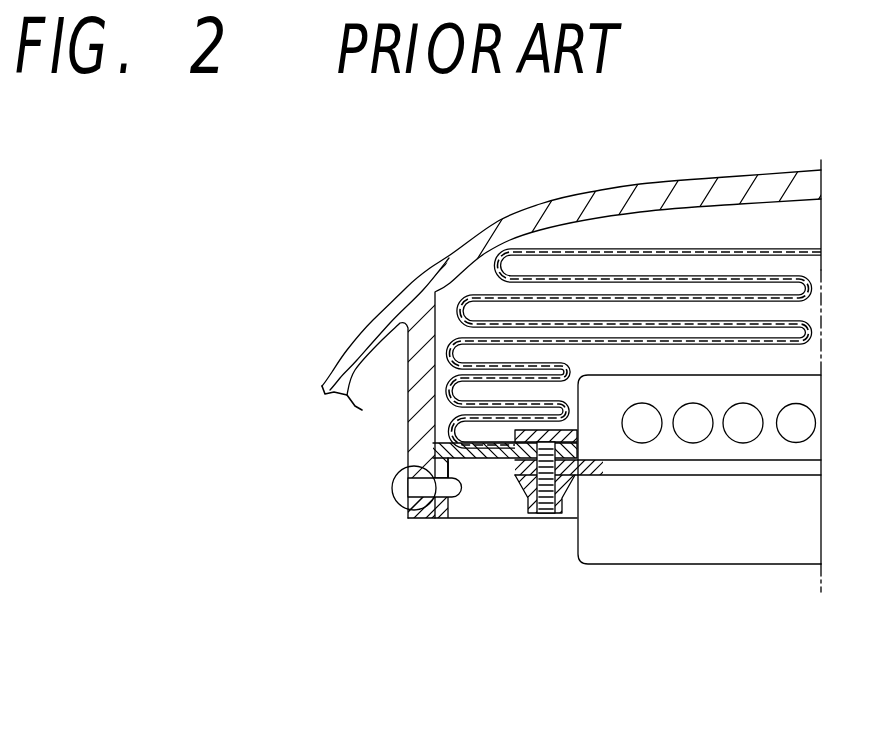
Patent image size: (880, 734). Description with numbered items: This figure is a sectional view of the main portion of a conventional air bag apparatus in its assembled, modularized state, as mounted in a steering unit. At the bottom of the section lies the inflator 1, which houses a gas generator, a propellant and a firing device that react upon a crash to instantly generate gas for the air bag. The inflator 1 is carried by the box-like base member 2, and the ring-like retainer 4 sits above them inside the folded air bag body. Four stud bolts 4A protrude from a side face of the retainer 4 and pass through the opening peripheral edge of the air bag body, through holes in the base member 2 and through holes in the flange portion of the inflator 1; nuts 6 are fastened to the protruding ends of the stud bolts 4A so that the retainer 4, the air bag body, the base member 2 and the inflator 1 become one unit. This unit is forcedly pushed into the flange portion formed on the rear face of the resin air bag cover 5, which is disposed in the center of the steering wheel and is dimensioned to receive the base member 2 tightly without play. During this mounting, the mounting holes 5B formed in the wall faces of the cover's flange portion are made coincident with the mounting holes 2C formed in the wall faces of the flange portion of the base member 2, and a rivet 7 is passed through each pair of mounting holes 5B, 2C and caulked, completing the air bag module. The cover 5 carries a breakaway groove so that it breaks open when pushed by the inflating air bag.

The inflator 1 is at (746, 540).
The base member 2 is at (413, 452).
The mounting holes 2C is at (443, 518).
The retainer 4 is at (583, 423).
The stud bolts 4A is at (550, 507).
The air bag cover 5 is at (527, 218).
The mounting holes 5B is at (415, 515).
The nuts 6 is at (518, 503).
The rivet 7 is at (392, 488).